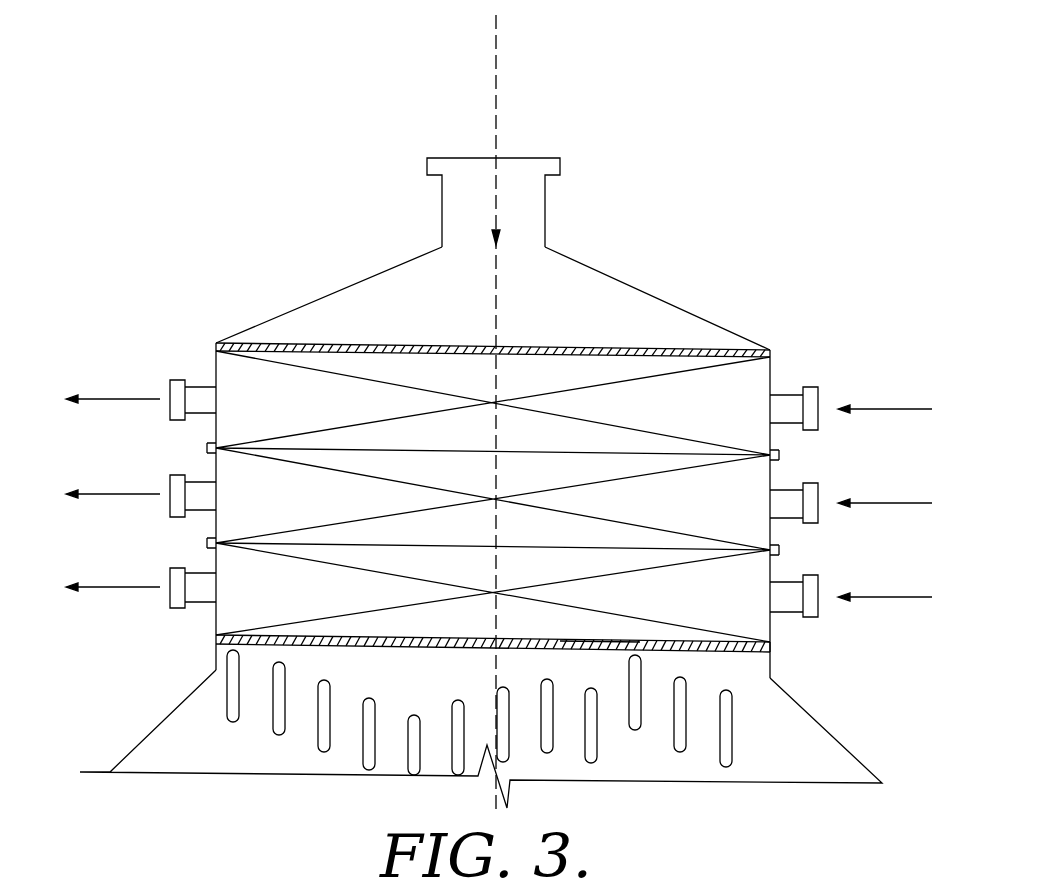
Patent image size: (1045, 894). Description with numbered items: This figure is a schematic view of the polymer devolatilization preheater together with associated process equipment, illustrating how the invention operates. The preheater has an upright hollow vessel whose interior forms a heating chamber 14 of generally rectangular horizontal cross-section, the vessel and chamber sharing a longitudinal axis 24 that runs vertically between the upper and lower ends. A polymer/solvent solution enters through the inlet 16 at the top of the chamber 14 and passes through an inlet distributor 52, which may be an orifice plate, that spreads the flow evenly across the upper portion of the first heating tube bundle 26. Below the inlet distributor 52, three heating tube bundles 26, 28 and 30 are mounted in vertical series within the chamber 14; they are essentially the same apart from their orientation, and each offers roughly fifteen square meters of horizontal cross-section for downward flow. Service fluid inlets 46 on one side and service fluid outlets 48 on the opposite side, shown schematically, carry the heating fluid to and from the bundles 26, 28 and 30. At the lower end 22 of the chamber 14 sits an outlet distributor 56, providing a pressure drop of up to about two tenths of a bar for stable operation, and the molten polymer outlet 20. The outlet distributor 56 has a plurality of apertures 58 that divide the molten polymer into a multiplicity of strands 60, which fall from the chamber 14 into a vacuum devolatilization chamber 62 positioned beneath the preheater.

The heating chamber 14 is at (393, 368).
The inlet 16 is at (537, 212).
The molten polymer outlet 20 is at (770, 653).
The lower end 22 is at (770, 628).
The longitudinal axis 24 is at (497, 37).
The heating tube bundle 26 is at (771, 384).
The heating tube bundle 28 is at (772, 478).
The heating tube bundle 30 is at (770, 565).
The service fluid inlets 46 is at (810, 393).
The service fluid outlets 48 is at (178, 383).
The inlet distributor 52 is at (668, 347).
The outlet distributor 56 is at (243, 645).
The apertures 58 is at (597, 640).
The strands 60 is at (366, 745).
The vacuum devolatilization chamber 62 is at (559, 713).